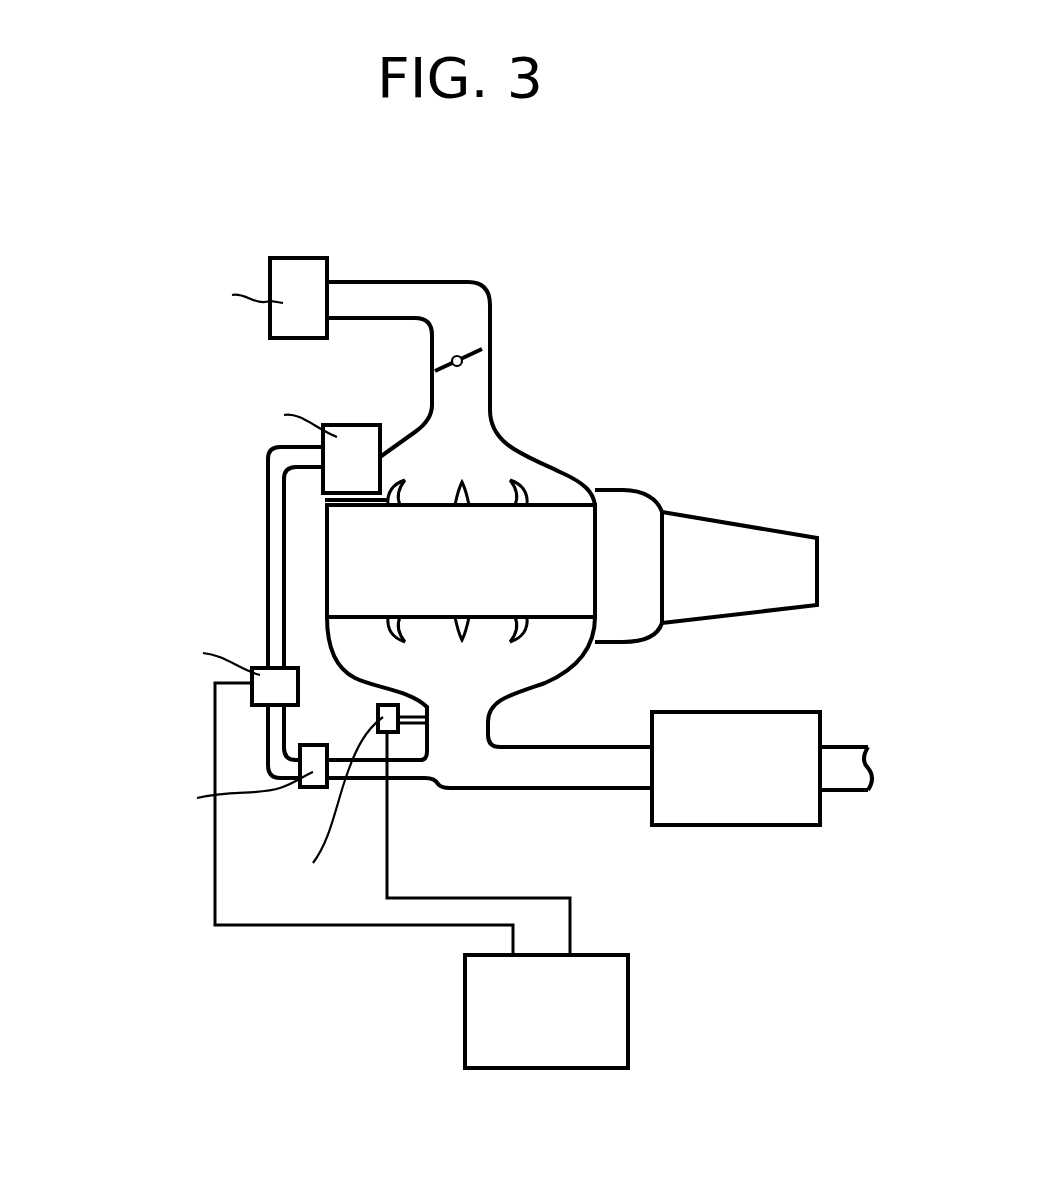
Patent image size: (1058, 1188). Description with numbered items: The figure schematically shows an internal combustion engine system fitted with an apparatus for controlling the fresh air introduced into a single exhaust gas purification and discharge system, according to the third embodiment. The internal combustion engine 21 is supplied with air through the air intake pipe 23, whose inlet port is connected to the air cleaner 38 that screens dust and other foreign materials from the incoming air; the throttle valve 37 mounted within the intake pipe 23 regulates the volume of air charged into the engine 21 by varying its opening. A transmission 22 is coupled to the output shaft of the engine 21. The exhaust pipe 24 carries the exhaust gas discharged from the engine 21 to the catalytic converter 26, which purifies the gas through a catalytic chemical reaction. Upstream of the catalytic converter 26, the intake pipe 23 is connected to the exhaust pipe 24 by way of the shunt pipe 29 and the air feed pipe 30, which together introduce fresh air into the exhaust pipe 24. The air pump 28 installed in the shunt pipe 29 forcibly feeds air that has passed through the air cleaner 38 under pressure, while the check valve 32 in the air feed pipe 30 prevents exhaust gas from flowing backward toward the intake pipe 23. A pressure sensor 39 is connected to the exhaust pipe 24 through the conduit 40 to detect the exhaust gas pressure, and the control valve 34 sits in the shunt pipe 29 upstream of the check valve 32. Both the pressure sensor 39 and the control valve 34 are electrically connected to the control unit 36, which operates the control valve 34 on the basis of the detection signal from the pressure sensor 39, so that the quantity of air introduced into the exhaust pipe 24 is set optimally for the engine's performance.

The internal combustion engine 21 is at (537, 528).
The transmission 22 is at (737, 537).
The air intake pipe 23 is at (475, 443).
The exhaust pipe 24 is at (543, 655).
The catalytic converter 26 is at (735, 820).
The air pump 28 is at (343, 425).
The shunt pipe 29 is at (266, 570).
The air feed pipe 30 is at (358, 780).
The check valve 32 is at (305, 788).
The control valve 34 is at (252, 670).
The control unit 36 is at (628, 1037).
The throttle valve 37 is at (462, 354).
The air cleaner 38 is at (295, 262).
The pressure sensor 39 is at (380, 710).
The conduit 40 is at (418, 727).